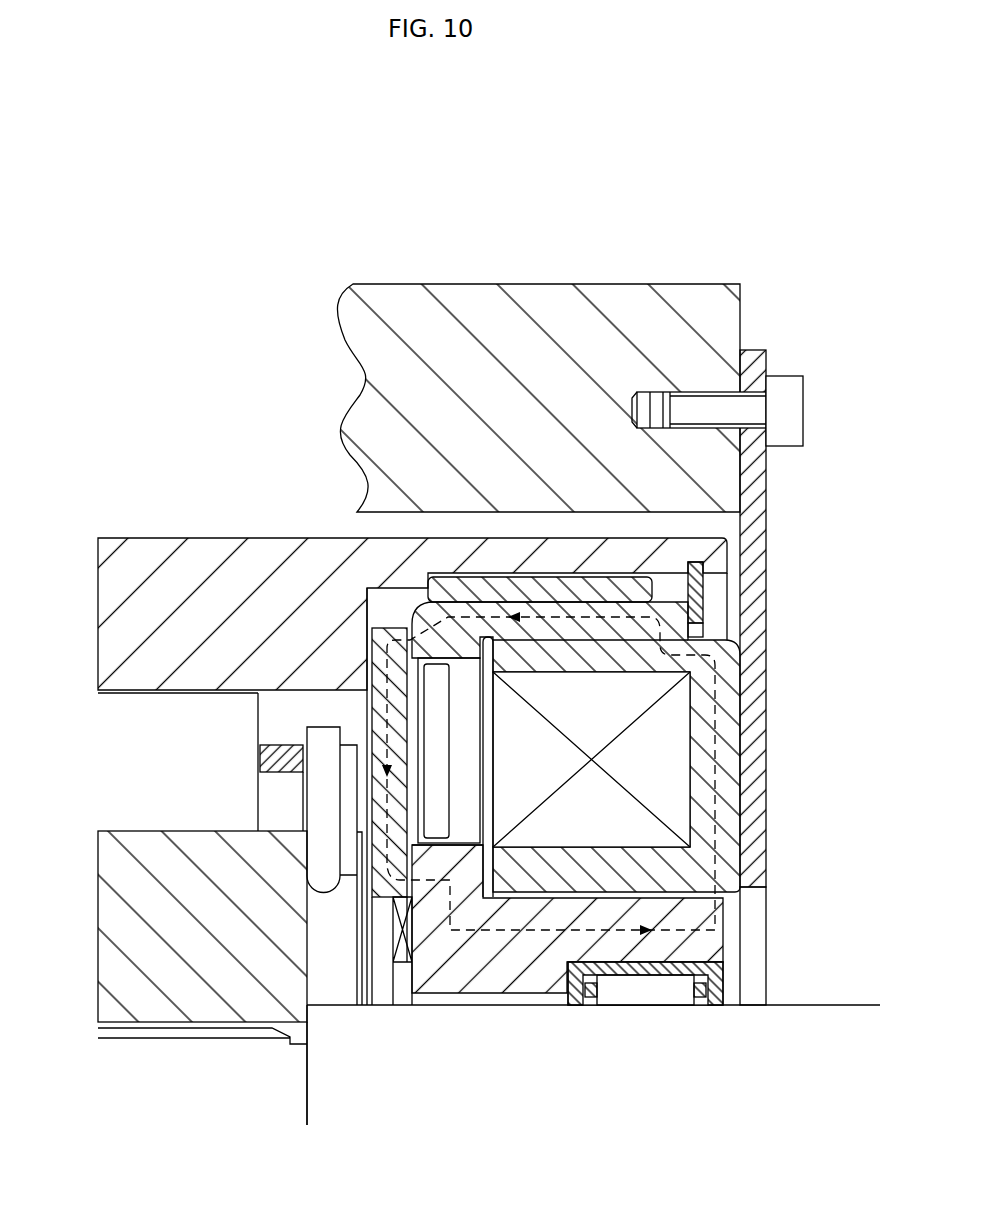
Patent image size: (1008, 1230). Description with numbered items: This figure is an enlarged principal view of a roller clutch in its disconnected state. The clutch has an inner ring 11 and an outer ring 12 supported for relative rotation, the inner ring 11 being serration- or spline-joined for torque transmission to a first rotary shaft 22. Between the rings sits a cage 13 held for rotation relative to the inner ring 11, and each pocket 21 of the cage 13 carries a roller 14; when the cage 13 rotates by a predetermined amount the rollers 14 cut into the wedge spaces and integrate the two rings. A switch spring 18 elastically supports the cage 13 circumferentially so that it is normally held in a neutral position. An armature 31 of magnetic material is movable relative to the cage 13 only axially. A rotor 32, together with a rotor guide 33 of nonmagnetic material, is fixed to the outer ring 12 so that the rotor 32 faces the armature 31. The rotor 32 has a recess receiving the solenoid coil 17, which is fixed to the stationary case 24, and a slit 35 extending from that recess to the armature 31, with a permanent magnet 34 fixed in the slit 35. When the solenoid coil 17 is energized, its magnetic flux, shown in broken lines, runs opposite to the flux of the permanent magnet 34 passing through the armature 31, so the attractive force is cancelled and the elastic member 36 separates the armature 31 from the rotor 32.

The inner ring 11 is at (155, 907).
The outer ring 12 is at (210, 590).
The cage 13 is at (282, 743).
The roller 14 is at (173, 755).
The solenoid coil 17 is at (595, 762).
The switch spring 18 is at (327, 763).
The pocket 21 is at (258, 750).
The first rotary shaft 22 is at (813, 1030).
The case 24 is at (502, 325).
The armature 31 is at (385, 885).
The rotor 32 is at (593, 913).
The rotor guide 33 is at (527, 588).
The permanent magnet 34 is at (430, 700).
The slit 35 is at (437, 847).
The elastic member 36 is at (393, 883).